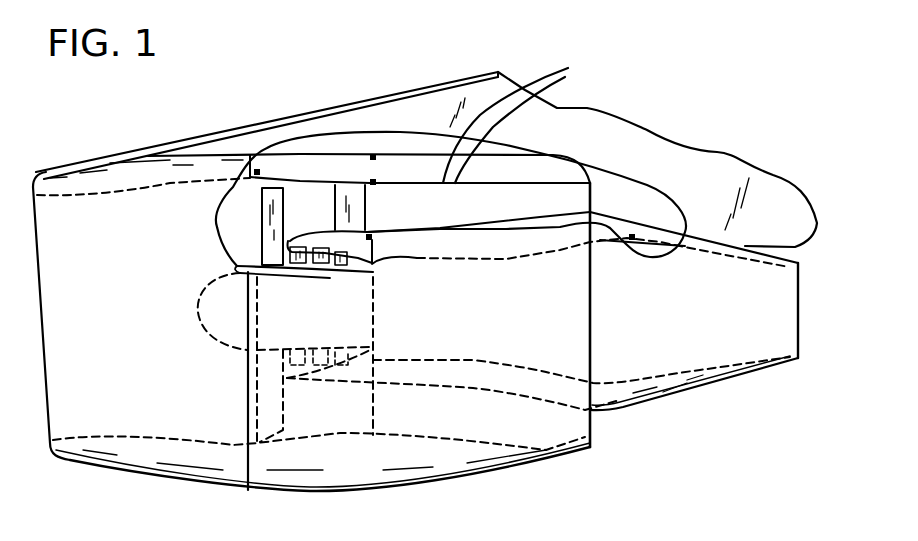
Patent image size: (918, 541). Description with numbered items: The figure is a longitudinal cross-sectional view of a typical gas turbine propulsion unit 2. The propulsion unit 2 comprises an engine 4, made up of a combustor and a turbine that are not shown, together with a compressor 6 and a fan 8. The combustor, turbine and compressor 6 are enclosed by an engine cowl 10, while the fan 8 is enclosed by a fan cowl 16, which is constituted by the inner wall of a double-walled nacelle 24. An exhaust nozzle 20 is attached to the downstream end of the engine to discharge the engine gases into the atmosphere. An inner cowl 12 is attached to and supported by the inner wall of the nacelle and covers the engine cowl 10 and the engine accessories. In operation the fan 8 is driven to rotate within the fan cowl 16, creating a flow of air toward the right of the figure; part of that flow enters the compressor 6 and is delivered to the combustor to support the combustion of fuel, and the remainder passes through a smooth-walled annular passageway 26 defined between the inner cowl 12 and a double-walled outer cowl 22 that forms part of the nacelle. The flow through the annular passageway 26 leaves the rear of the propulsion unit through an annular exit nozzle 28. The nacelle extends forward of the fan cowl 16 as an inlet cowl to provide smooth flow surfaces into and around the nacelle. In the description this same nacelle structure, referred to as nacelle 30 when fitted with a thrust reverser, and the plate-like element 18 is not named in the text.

The gas turbine propulsion unit 2 is at (145, 495).
The engine 4 is at (233, 366).
The compressor 6 is at (312, 268).
The fan 8 is at (263, 208).
The engine cowl 10 is at (557, 253).
The inner cowl 12 is at (417, 233).
The fan cowl 16 is at (282, 180).
The cover plate 18 is at (443, 86).
The exhaust nozzle 20 is at (656, 252).
The double-walled outer cowl 22 is at (525, 121).
The double-walled nacelle 24 is at (182, 153).
The annular passageway 26 is at (497, 207).
The annular exit nozzle 28 is at (566, 183).
The nacelle 30 is at (388, 495).